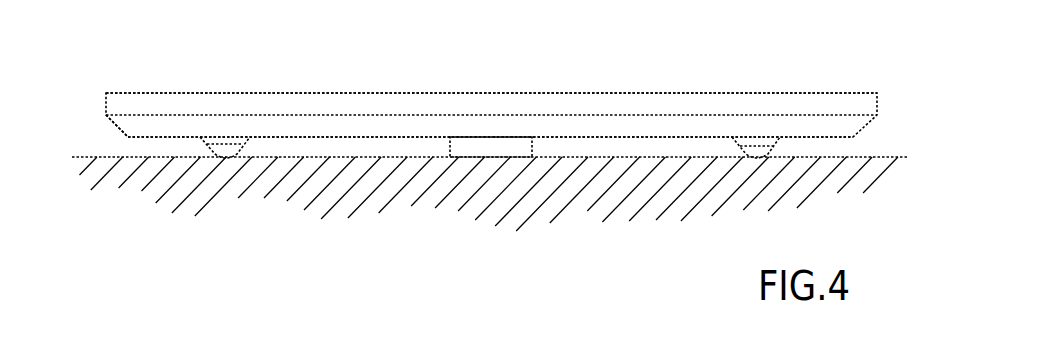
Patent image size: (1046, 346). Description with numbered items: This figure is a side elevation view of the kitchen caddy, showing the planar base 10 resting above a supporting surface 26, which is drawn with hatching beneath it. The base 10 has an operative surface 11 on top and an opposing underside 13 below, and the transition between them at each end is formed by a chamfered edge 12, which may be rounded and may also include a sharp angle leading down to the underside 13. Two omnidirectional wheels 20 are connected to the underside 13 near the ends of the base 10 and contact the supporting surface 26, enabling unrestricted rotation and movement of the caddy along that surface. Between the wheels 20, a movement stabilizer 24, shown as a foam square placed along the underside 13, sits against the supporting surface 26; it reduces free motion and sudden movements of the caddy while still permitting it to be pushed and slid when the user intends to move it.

The base 10 is at (288, 92).
The operative surface 11 is at (367, 92).
The chamfered edge 12 is at (128, 128).
The underside 13 is at (303, 138).
The omnidirectional wheel 20 is at (223, 155).
The movement stabilizer 24 is at (509, 143).
The supporting surface 26 is at (900, 158).